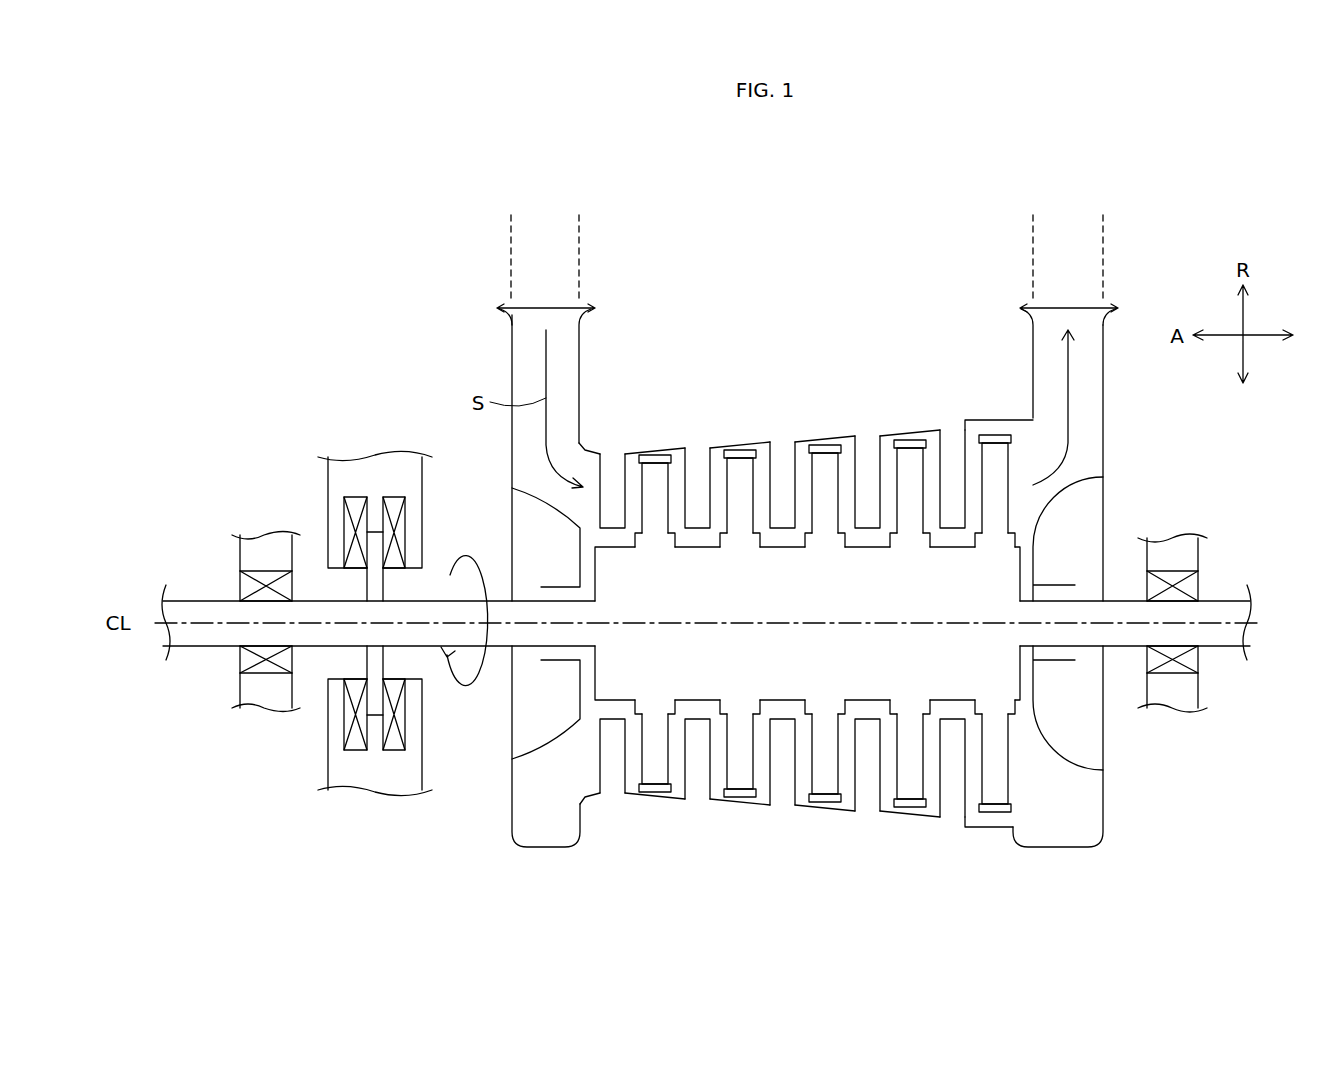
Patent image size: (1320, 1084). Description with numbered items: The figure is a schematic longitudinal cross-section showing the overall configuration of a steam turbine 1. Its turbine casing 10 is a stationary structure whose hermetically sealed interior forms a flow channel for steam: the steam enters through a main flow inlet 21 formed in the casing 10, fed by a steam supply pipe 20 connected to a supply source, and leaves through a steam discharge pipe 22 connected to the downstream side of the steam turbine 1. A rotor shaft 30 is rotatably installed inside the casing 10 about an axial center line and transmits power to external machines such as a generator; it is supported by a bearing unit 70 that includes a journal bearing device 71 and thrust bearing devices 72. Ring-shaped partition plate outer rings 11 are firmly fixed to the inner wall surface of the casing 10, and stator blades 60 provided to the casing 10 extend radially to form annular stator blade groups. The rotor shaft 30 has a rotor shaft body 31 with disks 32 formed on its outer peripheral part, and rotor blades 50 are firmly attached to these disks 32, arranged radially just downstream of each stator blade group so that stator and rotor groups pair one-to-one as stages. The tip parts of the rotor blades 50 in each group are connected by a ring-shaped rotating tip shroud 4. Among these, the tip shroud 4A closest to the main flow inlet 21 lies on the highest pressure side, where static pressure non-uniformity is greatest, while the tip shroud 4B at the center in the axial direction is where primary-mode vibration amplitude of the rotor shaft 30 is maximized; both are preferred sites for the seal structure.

The steam turbine 1 is at (1071, 854).
The tip shroud 4 is at (742, 440).
The tip shroud closest to the main flow inlet 4A is at (655, 445).
The tip shroud at the center in the axial direction 4B is at (826, 435).
The turbine casing 10 is at (543, 850).
The partition plate outer ring 11 is at (628, 450).
The steam supply pipe 20 is at (505, 248).
The main flow inlet 21 is at (518, 342).
The steam discharge pipe 22 is at (1032, 248).
The rotor shaft 30 is at (196, 600).
The rotor shaft body 31 is at (612, 582).
The disk 32 is at (824, 535).
The rotor blade 50 is at (657, 520).
The stator blade 60 is at (612, 470).
The bearing unit 70 is at (712, 599).
The journal bearing device 71 is at (268, 722).
The thrust bearing device 72 is at (378, 804).